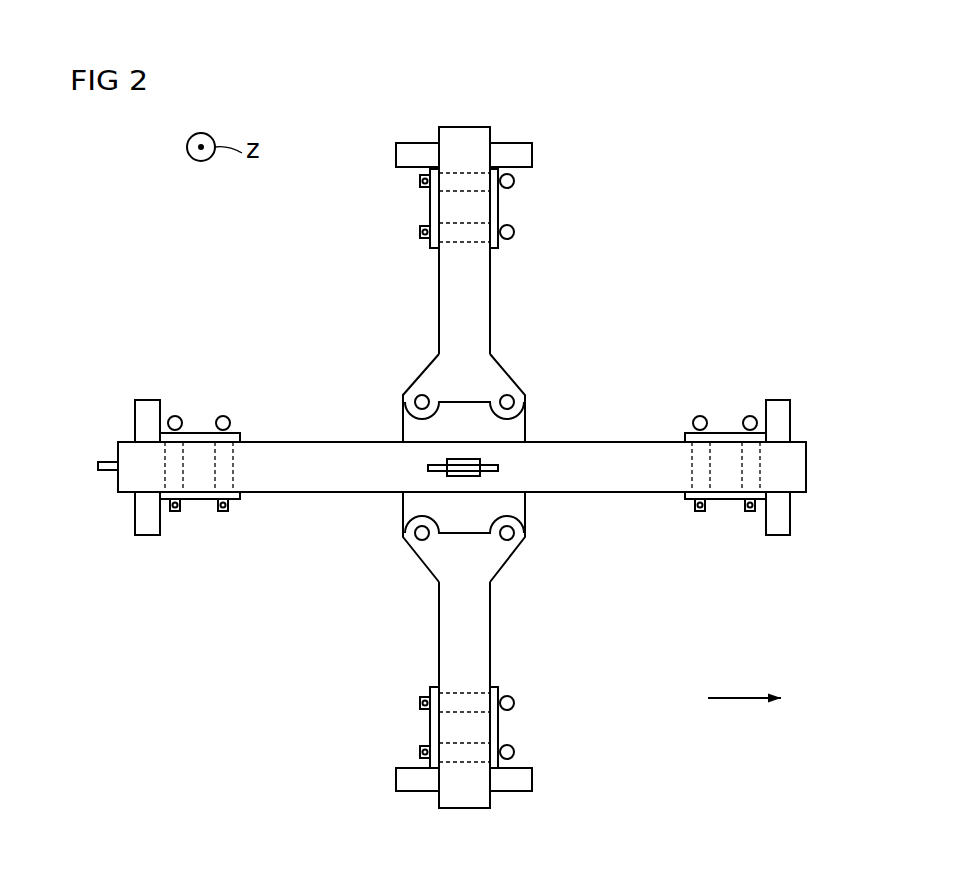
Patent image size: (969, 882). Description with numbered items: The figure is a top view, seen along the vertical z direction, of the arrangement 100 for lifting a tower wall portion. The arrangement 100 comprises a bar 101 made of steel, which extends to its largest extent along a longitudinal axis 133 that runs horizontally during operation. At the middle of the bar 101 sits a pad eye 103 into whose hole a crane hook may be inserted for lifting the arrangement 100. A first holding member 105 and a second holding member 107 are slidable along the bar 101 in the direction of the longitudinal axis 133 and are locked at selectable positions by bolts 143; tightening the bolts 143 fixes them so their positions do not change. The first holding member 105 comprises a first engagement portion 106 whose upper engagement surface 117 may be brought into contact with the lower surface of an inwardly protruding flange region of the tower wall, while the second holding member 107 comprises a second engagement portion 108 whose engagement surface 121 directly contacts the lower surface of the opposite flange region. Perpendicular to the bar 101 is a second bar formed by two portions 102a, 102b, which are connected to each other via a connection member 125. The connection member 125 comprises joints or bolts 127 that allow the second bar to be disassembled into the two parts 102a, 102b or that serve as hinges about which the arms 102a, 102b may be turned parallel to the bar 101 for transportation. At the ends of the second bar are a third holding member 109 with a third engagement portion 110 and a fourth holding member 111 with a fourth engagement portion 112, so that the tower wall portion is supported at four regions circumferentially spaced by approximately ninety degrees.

The arrangement for lifting a tower wall portion 100 is at (758, 178).
The bar 101 is at (322, 457).
The first portion of the second bar 102a is at (481, 287).
The second portion of the second bar 102b is at (481, 634).
The pad eye 103 is at (427, 467).
The first holding member 105 is at (205, 402).
The first engagement portion 106 is at (147, 528).
The second holding member 107 is at (720, 402).
The second engagement portion 108 is at (778, 528).
The third holding member 109 is at (560, 722).
The third engagement portion 110 is at (520, 778).
The fourth holding member 111 is at (545, 216).
The fourth engagement portion 112 is at (522, 157).
The upper engagement surface 117 is at (151, 510).
The engagement surface 121 is at (784, 510).
The connection member 125 is at (513, 427).
The joints or bolts 127 is at (418, 397).
The longitudinal axis 133 is at (740, 698).
The bolts 143 is at (418, 230).